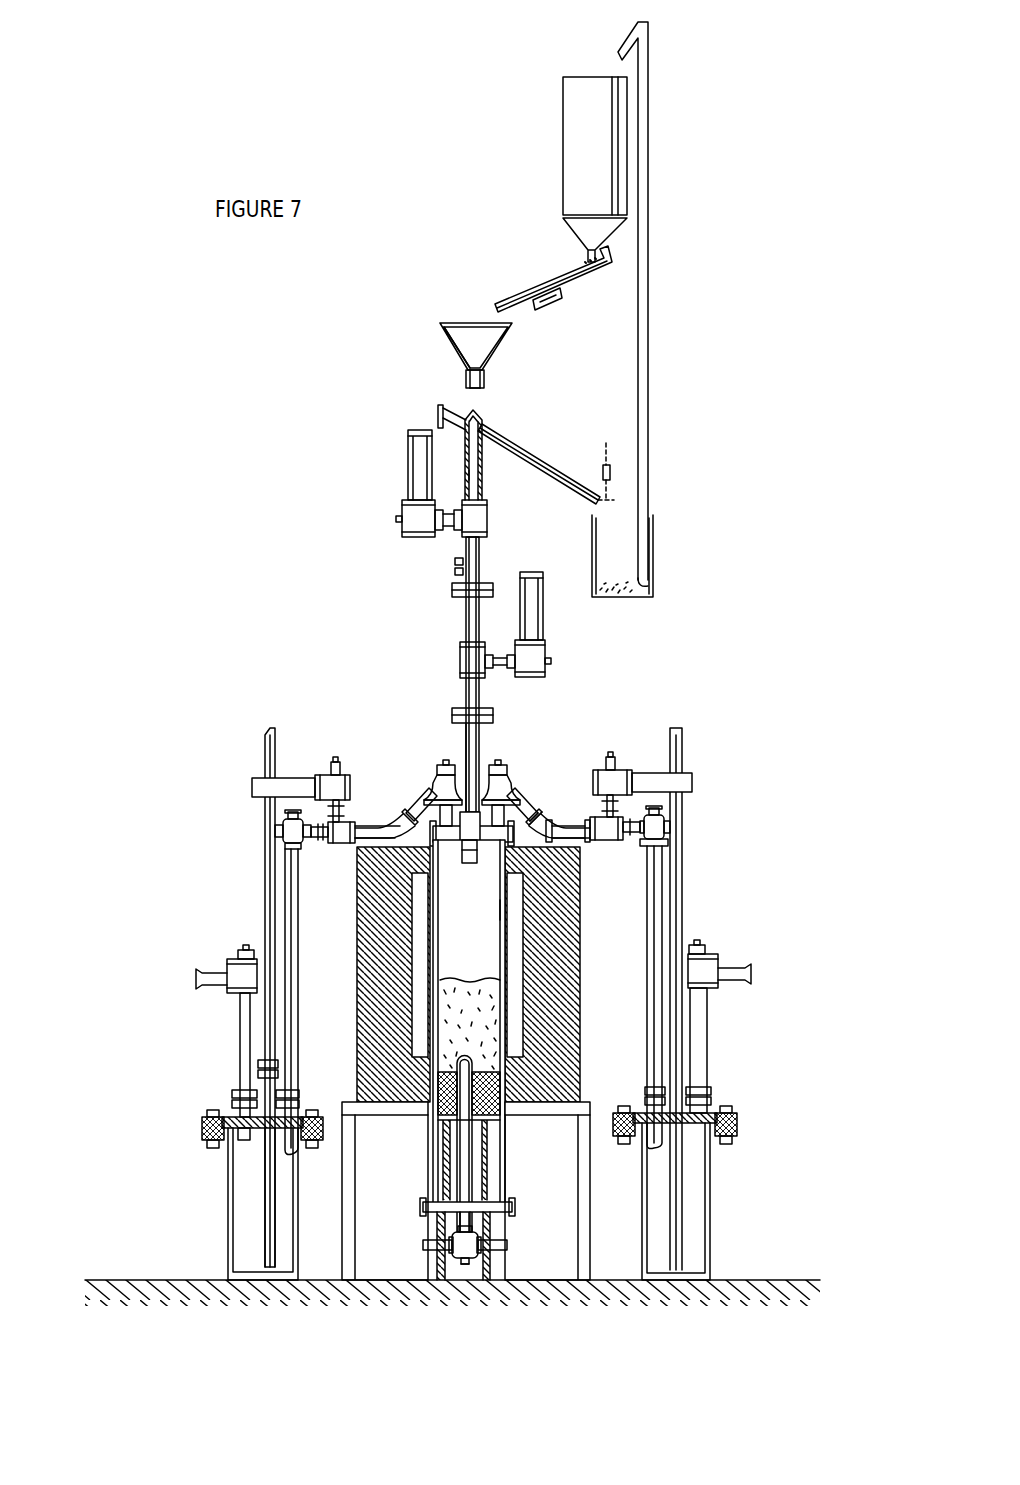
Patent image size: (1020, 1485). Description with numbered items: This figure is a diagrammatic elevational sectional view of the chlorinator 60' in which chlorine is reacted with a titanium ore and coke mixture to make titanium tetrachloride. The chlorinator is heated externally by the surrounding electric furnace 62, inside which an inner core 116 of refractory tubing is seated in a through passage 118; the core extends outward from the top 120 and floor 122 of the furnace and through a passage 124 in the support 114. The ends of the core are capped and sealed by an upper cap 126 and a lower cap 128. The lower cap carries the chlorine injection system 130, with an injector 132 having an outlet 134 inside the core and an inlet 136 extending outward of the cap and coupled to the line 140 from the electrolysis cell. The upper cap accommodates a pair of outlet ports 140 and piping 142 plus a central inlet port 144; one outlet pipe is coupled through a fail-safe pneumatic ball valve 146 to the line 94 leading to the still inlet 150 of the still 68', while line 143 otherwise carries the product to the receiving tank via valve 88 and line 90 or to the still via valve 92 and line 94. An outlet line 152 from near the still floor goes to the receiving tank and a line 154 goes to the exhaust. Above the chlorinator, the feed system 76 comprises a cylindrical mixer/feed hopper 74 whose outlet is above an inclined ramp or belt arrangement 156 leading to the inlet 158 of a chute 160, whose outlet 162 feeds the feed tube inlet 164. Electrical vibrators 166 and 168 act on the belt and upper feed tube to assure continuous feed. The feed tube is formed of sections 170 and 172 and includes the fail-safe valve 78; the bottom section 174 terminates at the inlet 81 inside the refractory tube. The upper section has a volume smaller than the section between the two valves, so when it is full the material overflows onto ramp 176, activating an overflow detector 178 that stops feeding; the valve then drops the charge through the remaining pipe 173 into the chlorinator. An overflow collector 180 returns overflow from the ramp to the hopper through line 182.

The mixer/feed hopper 74 is at (563, 135).
The inclined ramp or belt arrangement 156 is at (518, 282).
The chute inlet 158 is at (460, 323).
The chute 160 is at (458, 357).
The chute outlet 162 is at (481, 388).
The feed tube inlet 164 is at (484, 422).
The electrical vibrator 166 is at (560, 300).
The electrical vibrator 168 is at (455, 564).
The feed tube section 170 is at (484, 470).
The feed tube section 172 is at (481, 580).
The remaining pipe 173 is at (481, 756).
The bottom section 174 is at (499, 910).
The ramp 176 is at (552, 486).
The overflow detector 178 is at (606, 458).
The overflow collector 180 is at (653, 568).
The line 182 is at (648, 410).
The valve 78 is at (402, 515).
The feed system 76 is at (430, 563).
The chlorinator 60' is at (423, 991).
The furnace 62 is at (572, 943).
The inlet 81 is at (478, 856).
The valve 88 is at (350, 778).
The line 90 is at (300, 778).
The valve 92 is at (345, 843).
The line 94 is at (299, 1000).
The support 114 is at (355, 1196).
The inner core 116 is at (500, 948).
The through passage 118 is at (420, 1035).
The furnace top 120 is at (566, 826).
The furnace floor 122 is at (578, 1110).
The passage 124 is at (428, 1120).
The upper cap 126 is at (460, 852).
The lower cap 128 is at (497, 1213).
The chlorine injection system 130 is at (418, 1216).
The injector 132 is at (471, 1158).
The injector outlet 134 is at (474, 1064).
The injector inlet 136 is at (465, 1265).
The outlet ports 140 is at (440, 792).
The outlet piping 142 is at (512, 808).
The line 143 is at (379, 826).
The inlet port 144 is at (540, 795).
The fail-safe pneumatic ball valve 146 is at (304, 850).
The still inlet 150 is at (291, 1152).
The outlet line 152 is at (270, 1248).
The line 154 is at (240, 1045).
The still 68' is at (189, 1202).